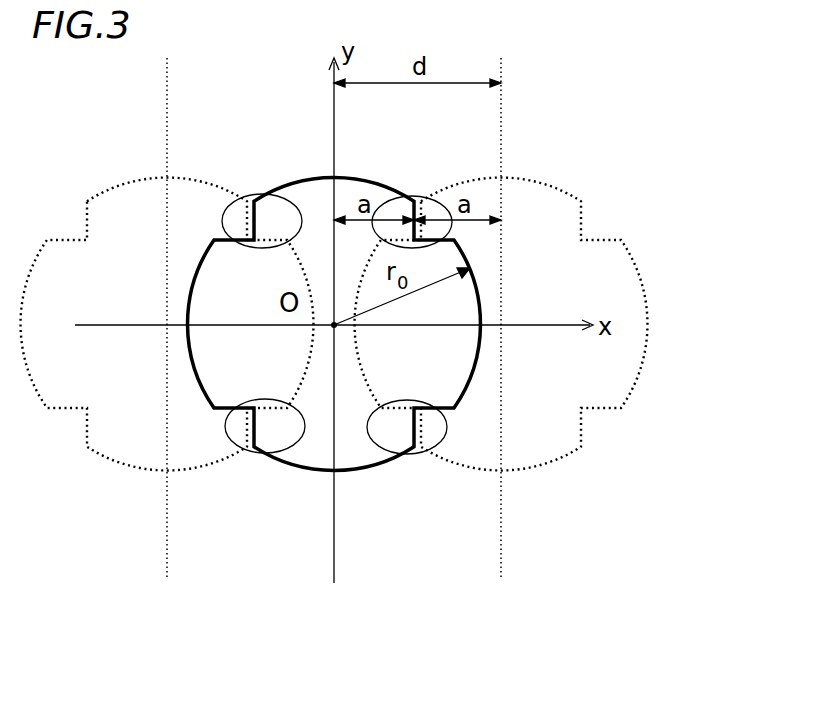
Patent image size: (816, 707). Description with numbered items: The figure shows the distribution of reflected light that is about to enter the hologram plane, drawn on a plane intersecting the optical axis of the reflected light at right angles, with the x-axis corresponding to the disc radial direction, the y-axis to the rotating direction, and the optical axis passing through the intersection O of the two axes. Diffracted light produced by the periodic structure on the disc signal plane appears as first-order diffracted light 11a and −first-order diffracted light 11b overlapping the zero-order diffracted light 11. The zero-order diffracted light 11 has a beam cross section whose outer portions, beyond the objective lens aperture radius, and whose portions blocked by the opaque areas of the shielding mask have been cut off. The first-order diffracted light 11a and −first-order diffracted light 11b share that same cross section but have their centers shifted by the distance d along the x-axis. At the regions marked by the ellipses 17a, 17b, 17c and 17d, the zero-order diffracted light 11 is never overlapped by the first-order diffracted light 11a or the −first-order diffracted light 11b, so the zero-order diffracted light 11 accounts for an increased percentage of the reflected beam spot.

The zero-order diffracted light 11 is at (375, 458).
The first-order diffracted light 11a is at (553, 452).
The −first-order diffracted light 11b is at (122, 456).
The ellipse 17a is at (415, 197).
The ellipse 17b is at (292, 197).
The ellipse 17c is at (252, 455).
The ellipse 17d is at (412, 457).